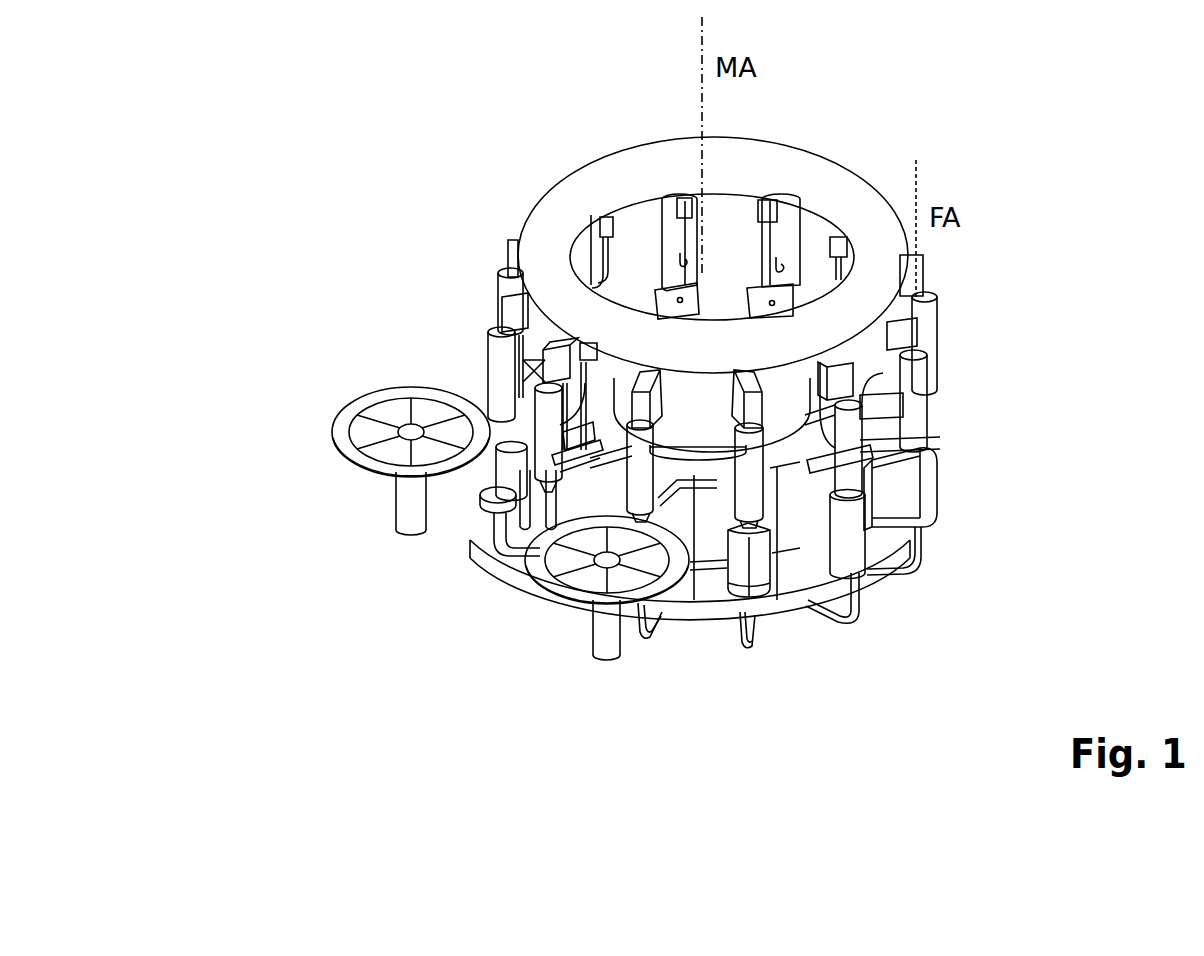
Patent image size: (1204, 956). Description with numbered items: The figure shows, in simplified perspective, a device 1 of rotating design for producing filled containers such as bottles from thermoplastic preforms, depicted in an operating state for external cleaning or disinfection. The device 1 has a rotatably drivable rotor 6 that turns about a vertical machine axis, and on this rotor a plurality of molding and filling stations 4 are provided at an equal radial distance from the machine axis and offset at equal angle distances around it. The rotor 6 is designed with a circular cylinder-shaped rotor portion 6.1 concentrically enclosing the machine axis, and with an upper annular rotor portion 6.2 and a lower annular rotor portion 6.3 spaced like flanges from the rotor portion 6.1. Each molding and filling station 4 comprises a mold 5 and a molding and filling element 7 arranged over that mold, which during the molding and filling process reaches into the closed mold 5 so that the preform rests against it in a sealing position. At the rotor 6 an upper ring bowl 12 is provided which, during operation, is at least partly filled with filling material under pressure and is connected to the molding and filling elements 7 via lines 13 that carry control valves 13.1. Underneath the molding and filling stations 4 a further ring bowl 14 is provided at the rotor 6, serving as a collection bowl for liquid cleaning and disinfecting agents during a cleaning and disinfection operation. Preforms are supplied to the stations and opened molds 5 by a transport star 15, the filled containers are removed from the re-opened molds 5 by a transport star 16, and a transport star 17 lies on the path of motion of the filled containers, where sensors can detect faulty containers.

The device 1 is at (634, 397).
The molding and filling station 4 is at (713, 409).
The mold 5 is at (951, 511).
The rotor 6 is at (791, 598).
The rotor portion 6.1 is at (845, 545).
The rotor portion 6.2 is at (702, 598).
The rotor portion 6.3 is at (760, 608).
The molding and filling element 7 is at (735, 335).
The ring bowl 12 is at (695, 222).
The line 13 is at (753, 240).
The control valve 13.1 is at (764, 120).
The ring bowl 14 is at (705, 557).
The transport star 15 is at (446, 554).
The transport star 16 is at (357, 447).
The transport star 17 is at (574, 606).